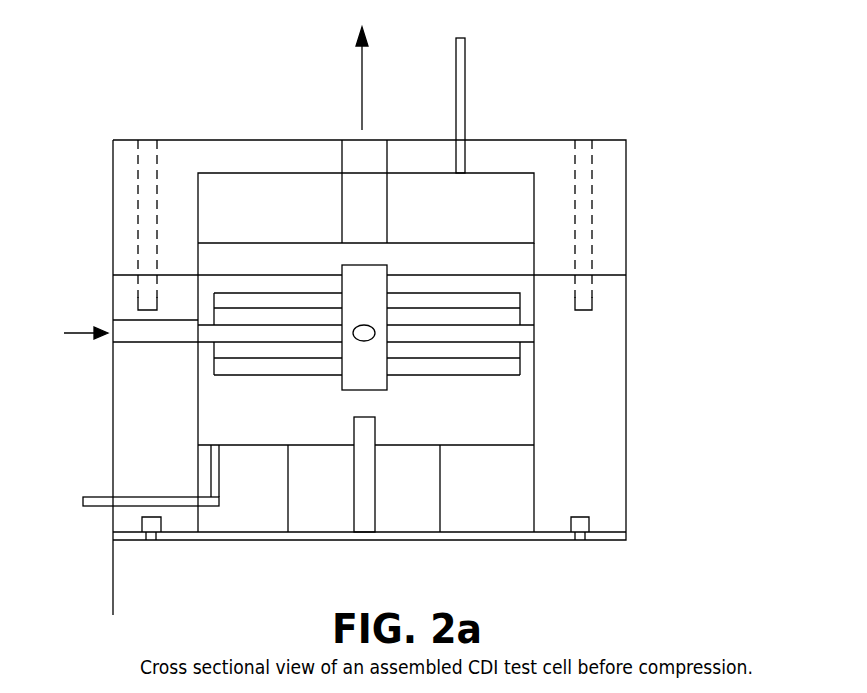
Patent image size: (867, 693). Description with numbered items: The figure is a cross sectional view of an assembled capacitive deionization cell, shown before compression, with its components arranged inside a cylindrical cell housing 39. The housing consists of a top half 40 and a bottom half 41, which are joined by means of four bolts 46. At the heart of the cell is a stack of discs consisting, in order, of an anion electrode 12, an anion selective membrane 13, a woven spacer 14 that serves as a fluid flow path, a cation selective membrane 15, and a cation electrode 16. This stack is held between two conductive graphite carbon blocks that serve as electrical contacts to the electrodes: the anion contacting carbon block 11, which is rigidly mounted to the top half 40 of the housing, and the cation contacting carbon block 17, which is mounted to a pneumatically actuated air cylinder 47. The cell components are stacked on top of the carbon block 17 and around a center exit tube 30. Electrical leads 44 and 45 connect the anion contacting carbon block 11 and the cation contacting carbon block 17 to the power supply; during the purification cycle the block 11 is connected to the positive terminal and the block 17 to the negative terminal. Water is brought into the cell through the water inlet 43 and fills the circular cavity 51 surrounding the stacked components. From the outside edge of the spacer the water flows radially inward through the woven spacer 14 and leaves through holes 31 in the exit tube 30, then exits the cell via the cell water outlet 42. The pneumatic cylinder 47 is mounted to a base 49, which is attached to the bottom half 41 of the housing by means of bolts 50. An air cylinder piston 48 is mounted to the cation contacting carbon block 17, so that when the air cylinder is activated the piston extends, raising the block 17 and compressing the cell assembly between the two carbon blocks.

The anion electrode contacting graphite carbon block 11 is at (534, 211).
The anion electrode 12 is at (523, 300).
The anion selective membrane 13 is at (523, 315).
The woven spacer 14 is at (535, 332).
The cation selective membrane 15 is at (522, 350).
The cation electrode 16 is at (522, 367).
The cation electrode contacting graphite carbon block 17 is at (535, 413).
The center exit tube 30 is at (387, 283).
The holes 31 is at (370, 341).
The cylindrical cell housing 39 is at (626, 140).
The top half of the housing 40 is at (626, 188).
The bottom half of the housing 41 is at (626, 509).
The cell water outlet 42 is at (353, 139).
The water inlet 43 is at (131, 321).
The electrical lead 44 is at (465, 94).
The electrical lead 45 is at (96, 497).
The bolts 46 is at (147, 139).
The pneumatically actuated air cylinder 47 is at (440, 498).
The air cylinder piston 48 is at (365, 536).
The base 49 is at (485, 543).
The bolts 50 is at (150, 543).
The circular cavity 51 is at (207, 303).